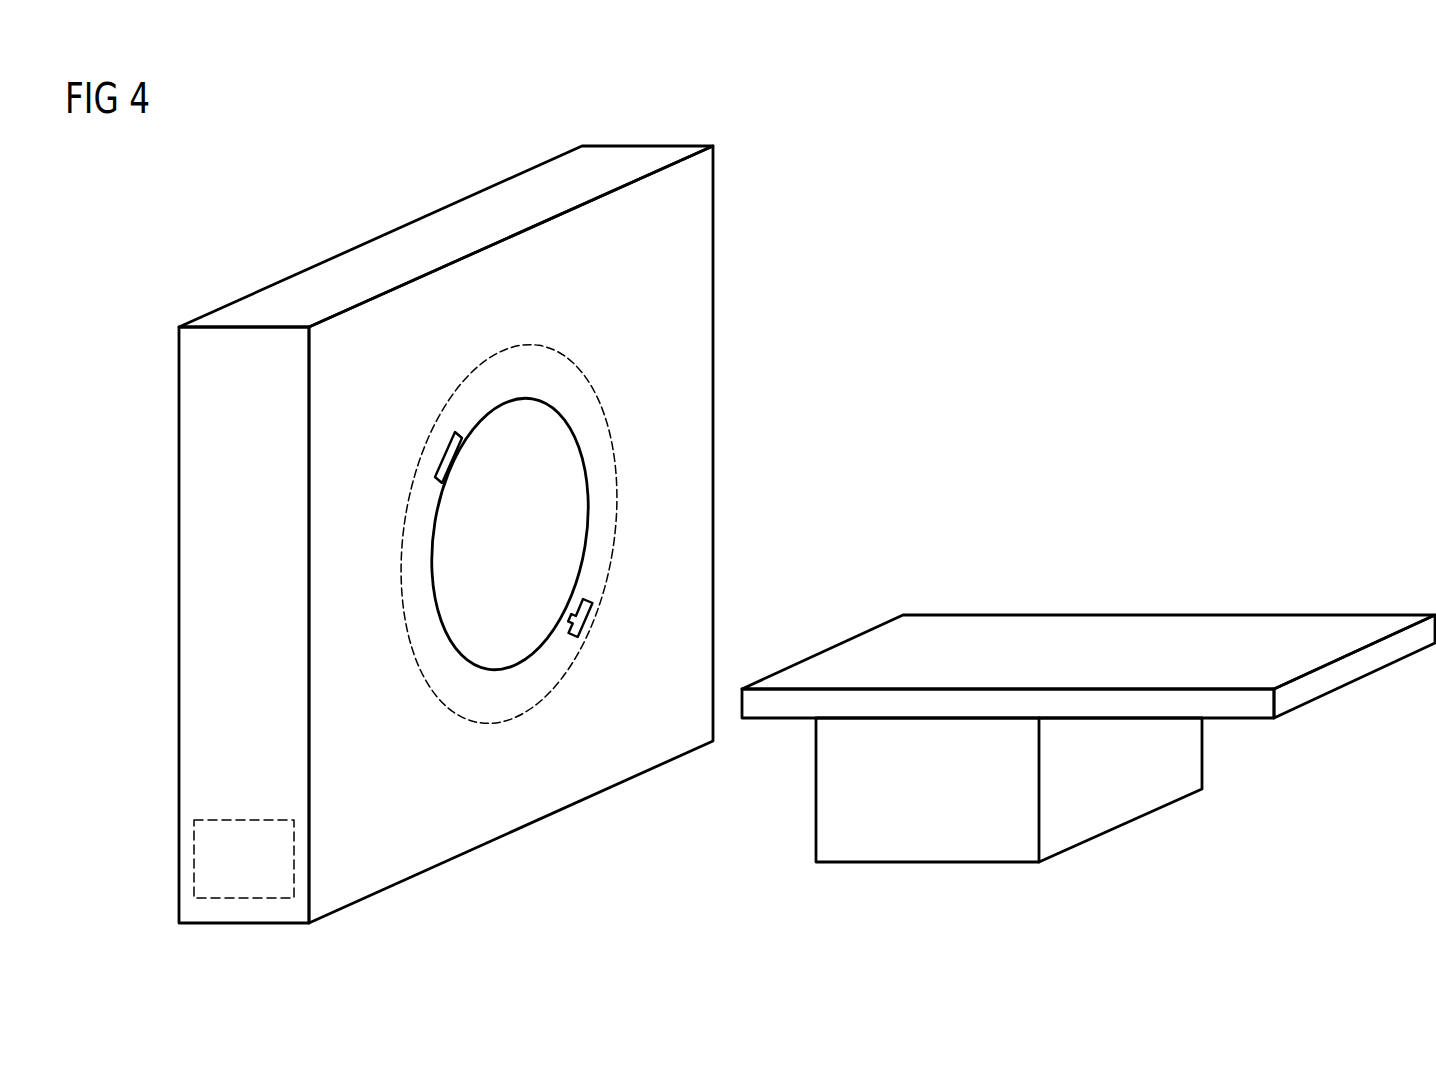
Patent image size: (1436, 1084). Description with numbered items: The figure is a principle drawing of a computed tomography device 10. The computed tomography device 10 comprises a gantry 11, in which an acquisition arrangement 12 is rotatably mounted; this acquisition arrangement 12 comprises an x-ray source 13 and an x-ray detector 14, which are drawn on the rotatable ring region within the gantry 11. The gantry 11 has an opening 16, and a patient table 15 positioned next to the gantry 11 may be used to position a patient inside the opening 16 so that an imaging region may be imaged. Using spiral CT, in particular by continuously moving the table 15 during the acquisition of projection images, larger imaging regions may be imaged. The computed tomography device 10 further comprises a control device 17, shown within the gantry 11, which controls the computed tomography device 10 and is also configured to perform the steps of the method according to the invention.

The computed tomography device 10 is at (952, 306).
The gantry 11 is at (443, 220).
The acquisition arrangement 12 is at (582, 364).
The x-ray source 13 is at (590, 627).
The x-ray detector 14 is at (437, 455).
The patient table 15 is at (1167, 624).
The opening 16 is at (570, 498).
The control device 17 is at (194, 853).